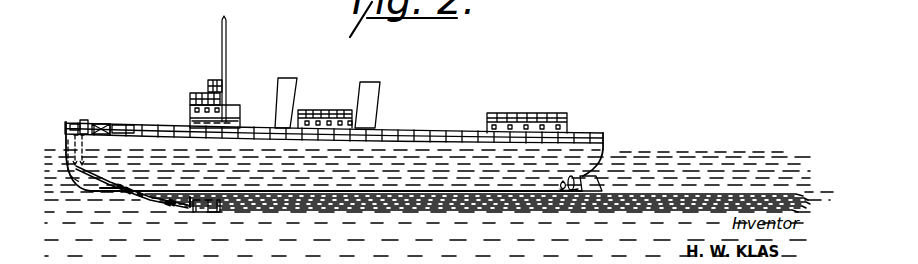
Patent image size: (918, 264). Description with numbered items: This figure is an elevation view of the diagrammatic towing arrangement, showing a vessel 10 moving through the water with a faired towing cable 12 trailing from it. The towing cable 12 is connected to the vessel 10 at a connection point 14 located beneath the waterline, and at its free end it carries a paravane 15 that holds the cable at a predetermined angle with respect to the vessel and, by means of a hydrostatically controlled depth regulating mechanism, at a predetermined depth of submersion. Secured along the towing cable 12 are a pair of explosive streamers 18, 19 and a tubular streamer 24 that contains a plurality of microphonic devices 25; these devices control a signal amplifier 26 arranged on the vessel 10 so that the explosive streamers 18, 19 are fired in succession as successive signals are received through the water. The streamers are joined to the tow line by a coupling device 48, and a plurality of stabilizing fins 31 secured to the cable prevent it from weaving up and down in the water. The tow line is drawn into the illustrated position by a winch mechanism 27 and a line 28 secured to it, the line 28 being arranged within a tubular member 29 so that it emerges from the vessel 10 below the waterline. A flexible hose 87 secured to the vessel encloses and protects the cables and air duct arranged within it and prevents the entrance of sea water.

The vessel 10 is at (613, 147).
The faired towing cable 12 is at (153, 205).
The connection point 14 is at (81, 124).
The paravane 15 is at (210, 214).
The explosive streamer 18 is at (403, 208).
The explosive streamer 19 is at (433, 208).
The tubular streamer 24 is at (357, 208).
The microphonic devices 25 is at (272, 208).
The signal amplifier 26 is at (145, 118).
The winch mechanism 27 is at (100, 125).
The line 28 is at (84, 122).
The tubular member 29 is at (65, 147).
The stabilizing fin 31 is at (107, 190).
The coupling device 48 is at (129, 204).
The flexible hose 87 is at (102, 130).